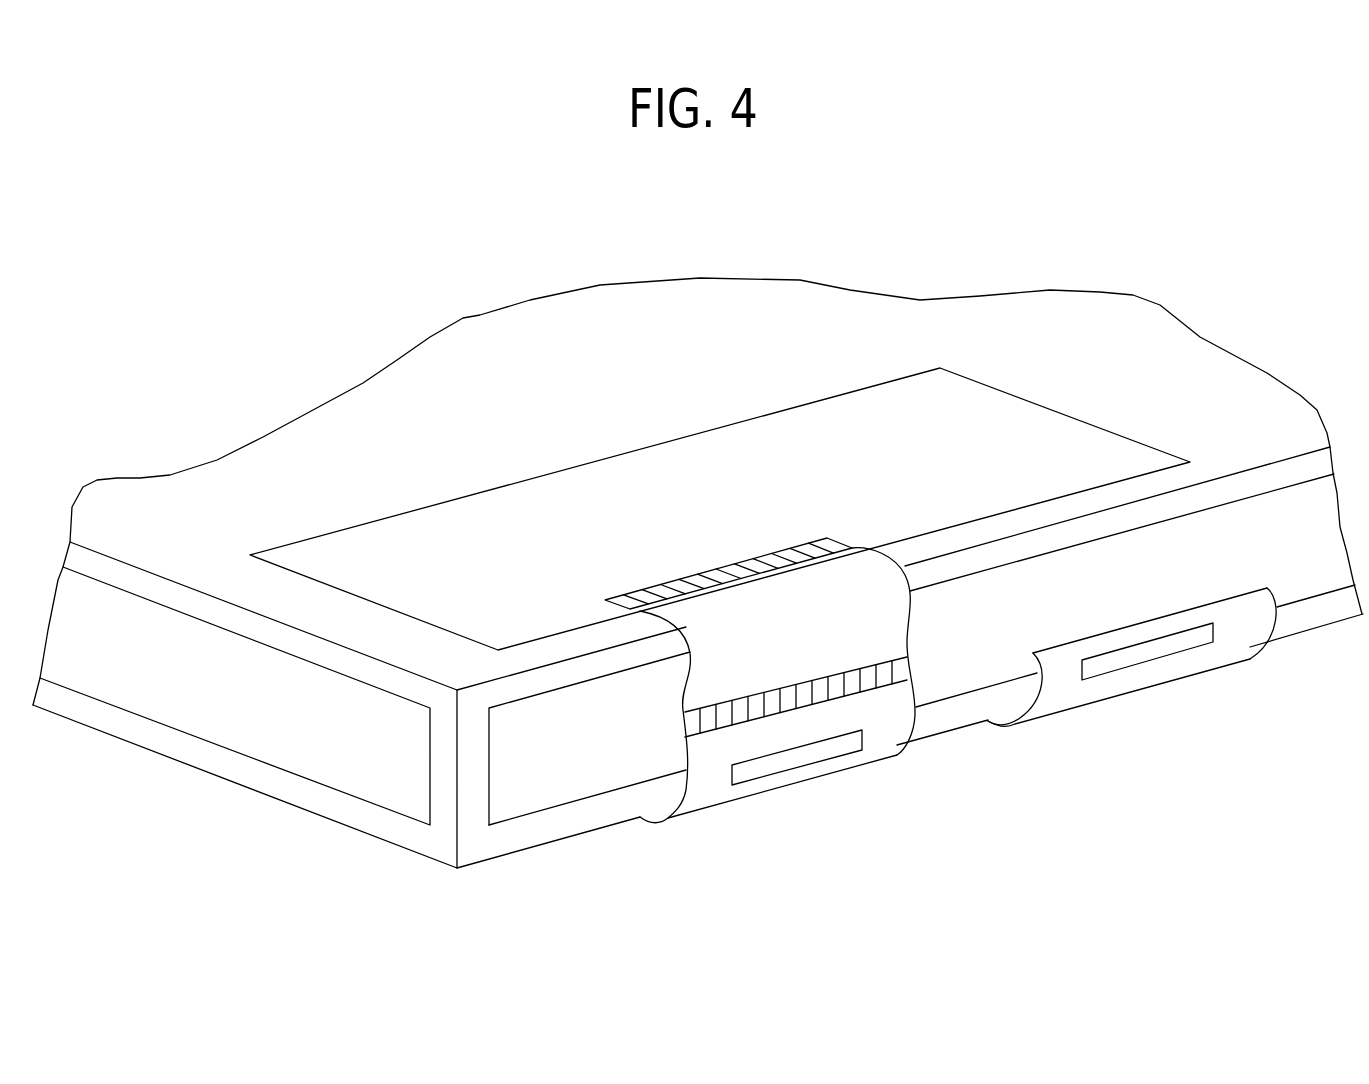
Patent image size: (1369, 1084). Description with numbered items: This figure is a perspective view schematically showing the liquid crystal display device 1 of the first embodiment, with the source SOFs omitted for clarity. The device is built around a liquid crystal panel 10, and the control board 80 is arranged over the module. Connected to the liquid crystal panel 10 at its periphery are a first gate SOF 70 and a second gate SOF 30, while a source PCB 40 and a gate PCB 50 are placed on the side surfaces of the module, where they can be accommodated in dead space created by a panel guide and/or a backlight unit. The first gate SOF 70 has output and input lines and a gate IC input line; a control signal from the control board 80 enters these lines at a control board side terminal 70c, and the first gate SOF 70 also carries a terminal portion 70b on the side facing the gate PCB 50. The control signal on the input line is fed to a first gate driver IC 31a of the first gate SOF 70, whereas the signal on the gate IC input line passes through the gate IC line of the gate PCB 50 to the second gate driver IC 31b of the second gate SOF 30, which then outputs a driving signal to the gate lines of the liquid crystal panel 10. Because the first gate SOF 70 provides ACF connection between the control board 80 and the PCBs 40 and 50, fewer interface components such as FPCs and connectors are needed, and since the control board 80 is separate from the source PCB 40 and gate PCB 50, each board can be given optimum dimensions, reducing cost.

The liquid crystal display device 1 is at (200, 350).
The liquid crystal panel 10 is at (375, 820).
The second gate SOF 30 is at (1107, 685).
The first gate driver IC 31a is at (852, 745).
The second gate driver IC 31b is at (1203, 638).
The source PCB 40 is at (280, 725).
The gate PCB 50 is at (518, 790).
The first gate SOF 70 is at (705, 797).
The cable terminal portion 70b is at (732, 714).
The control board side terminal 70c is at (810, 550).
The control board 80 is at (620, 473).